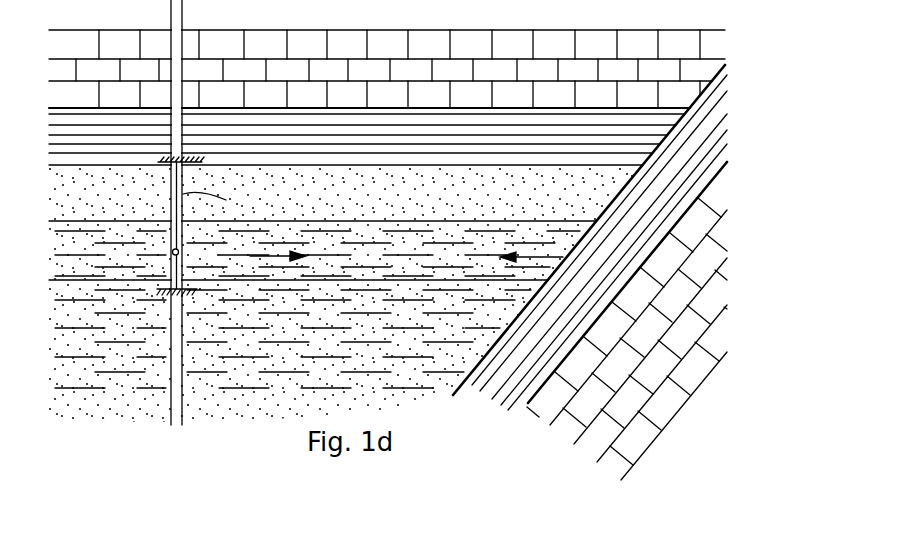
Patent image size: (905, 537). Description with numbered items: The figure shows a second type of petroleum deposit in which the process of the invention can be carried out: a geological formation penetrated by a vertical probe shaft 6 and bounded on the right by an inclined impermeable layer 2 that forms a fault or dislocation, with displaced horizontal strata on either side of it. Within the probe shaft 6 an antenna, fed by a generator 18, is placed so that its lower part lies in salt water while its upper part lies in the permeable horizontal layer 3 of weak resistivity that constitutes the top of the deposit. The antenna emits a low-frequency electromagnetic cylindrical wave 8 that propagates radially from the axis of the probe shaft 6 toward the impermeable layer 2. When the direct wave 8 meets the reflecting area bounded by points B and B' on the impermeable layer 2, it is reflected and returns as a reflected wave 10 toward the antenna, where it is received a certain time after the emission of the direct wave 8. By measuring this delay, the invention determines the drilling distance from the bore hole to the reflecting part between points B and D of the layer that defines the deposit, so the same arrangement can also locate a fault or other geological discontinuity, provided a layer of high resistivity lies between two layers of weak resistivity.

The impermeable layer 2 is at (590, 237).
The horizontal layer 3 is at (312, 253).
The probe shaft 6 is at (179, 11).
The cylindrical wave 8 is at (278, 249).
The reflected wave 10 is at (531, 250).
The generator 18 is at (172, 252).
The point D of reflecting part BD D is at (352, 170).
The point B of reflecting area B is at (304, 285).
The point B' of reflecting area B' is at (330, 223).